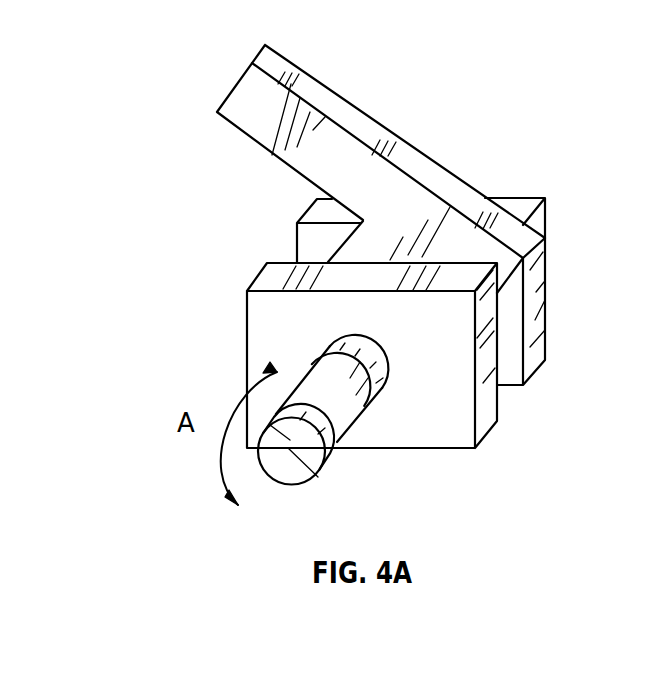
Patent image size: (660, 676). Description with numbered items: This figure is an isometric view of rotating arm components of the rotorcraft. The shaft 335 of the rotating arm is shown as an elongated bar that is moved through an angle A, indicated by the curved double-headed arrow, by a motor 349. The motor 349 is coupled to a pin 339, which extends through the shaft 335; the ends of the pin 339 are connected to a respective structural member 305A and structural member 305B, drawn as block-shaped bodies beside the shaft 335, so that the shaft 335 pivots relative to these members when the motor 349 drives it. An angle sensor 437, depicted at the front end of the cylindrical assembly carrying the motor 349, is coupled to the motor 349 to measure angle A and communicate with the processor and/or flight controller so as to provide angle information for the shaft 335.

The shaft 335 is at (232, 110).
The structural member 305A is at (485, 418).
The structural member 305B is at (530, 353).
The pin 339 is at (351, 348).
The motor 349 is at (350, 402).
The angle sensor 437 is at (335, 453).